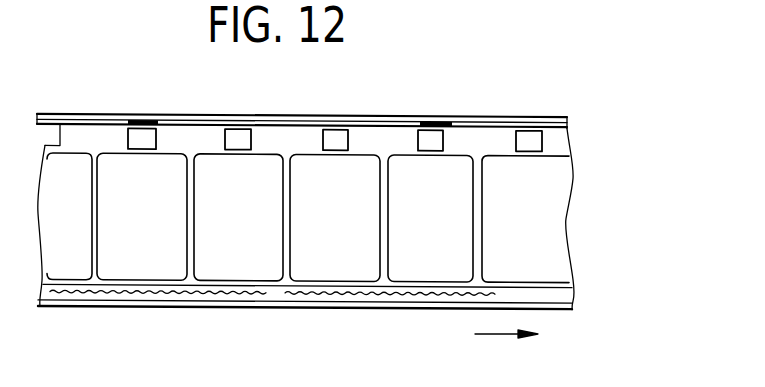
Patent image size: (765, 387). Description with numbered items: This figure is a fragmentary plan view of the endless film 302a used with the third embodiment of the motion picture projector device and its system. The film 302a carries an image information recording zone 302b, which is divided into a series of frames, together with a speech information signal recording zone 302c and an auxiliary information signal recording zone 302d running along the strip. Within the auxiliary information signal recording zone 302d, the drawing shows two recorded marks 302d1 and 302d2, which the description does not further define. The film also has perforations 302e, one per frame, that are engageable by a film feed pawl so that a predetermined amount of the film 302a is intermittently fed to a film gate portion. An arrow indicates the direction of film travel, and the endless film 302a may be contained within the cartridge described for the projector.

The endless film 302a is at (232, 261).
The image information recording zone 302b is at (659, 228).
The speech information signal recording zone 302c is at (419, 352).
The auxiliary information signal recording zone 302d is at (562, 90).
The recorded control mark 302d1 is at (440, 121).
The recorded control mark 302d2 is at (148, 120).
The perforations 302e is at (541, 142).